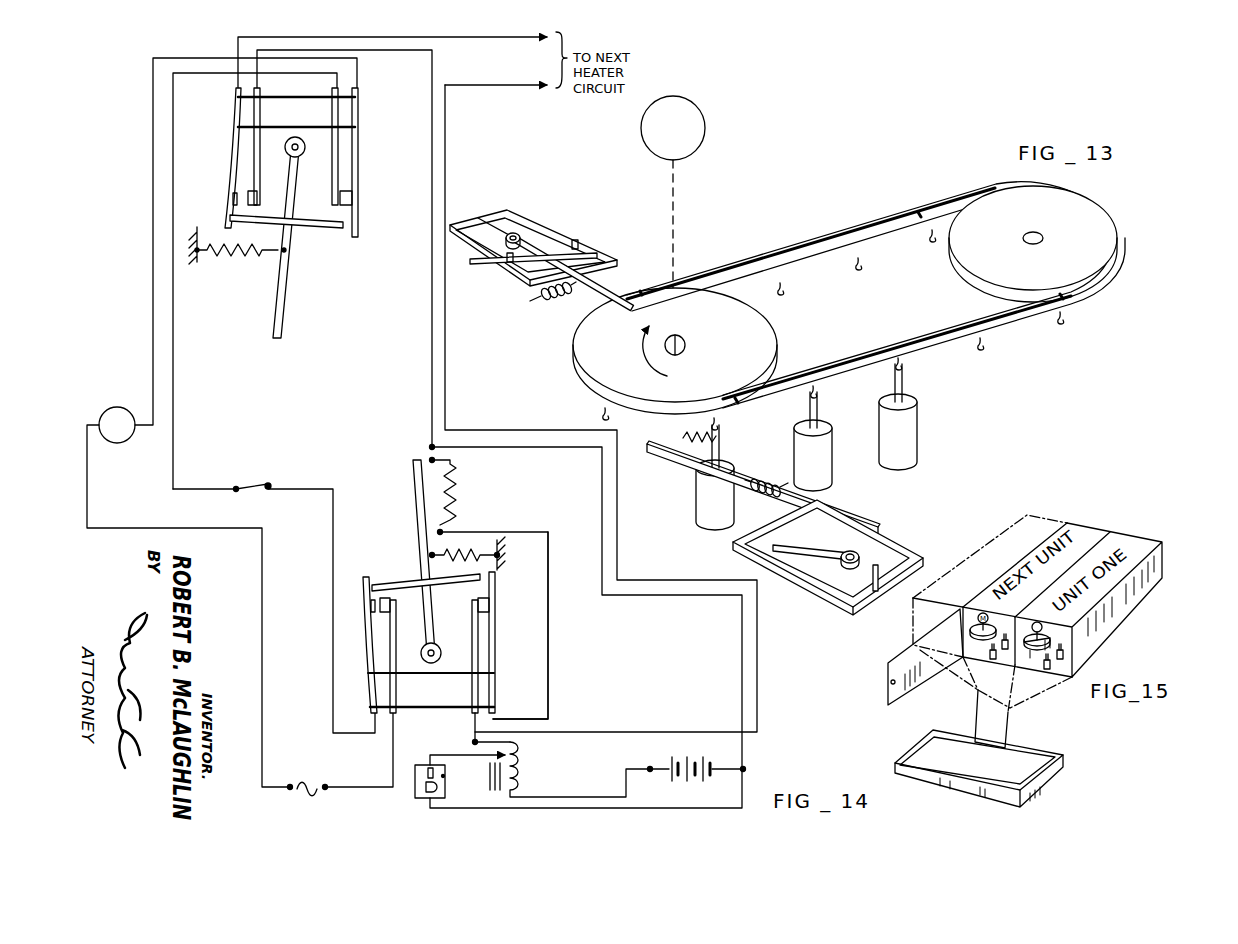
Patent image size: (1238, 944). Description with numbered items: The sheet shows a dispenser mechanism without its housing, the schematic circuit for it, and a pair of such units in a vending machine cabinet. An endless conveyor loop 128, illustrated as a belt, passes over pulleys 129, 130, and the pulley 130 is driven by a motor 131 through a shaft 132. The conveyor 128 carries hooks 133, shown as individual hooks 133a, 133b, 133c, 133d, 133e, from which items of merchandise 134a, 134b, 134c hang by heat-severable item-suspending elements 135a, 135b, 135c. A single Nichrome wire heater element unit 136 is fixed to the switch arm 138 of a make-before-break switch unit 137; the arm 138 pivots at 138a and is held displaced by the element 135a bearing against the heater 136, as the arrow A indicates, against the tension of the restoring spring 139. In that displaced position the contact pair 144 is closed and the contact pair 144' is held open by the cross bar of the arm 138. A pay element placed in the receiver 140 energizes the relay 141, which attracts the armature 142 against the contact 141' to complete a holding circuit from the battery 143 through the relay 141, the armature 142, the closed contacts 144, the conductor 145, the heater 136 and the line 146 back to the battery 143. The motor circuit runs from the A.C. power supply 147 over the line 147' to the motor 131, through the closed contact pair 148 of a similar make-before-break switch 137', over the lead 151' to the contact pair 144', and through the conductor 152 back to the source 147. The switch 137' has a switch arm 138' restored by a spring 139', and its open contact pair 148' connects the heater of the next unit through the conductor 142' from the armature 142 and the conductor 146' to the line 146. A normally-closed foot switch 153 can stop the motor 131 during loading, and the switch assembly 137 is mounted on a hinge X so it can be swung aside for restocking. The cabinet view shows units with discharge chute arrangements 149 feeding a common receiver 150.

In FIG. 13, the endless conveyor loop 128 is at (920, 203).
In FIG. 15, the endless conveyor loop 128 is at (1068, 634).
In FIG. 13, the pulley 129 is at (1075, 264).
In FIG. 13, the pulley 130 is at (738, 360).
In FIG. 15, the pulley 130 is at (1032, 650).
In FIG. 14, the motor 131 is at (121, 443).
In FIG. 13, the motor 131 is at (704, 128).
In FIG. 15, the motor 131 is at (1037, 622).
In FIG. 13, the shaft 132 is at (674, 222).
In FIG. 13, the hooks 133 is at (787, 289).
In FIG. 13, the hook 133a is at (721, 425).
In FIG. 13, the hook 133b is at (823, 396).
In FIG. 13, the hook 133c is at (906, 370).
In FIG. 13, the hook 133d is at (986, 347).
In FIG. 13, the hook 133e is at (1066, 320).
In FIG. 13, the heater 134a is at (699, 515).
In FIG. 15, the heater 134a is at (1050, 668).
In FIG. 13, the heater 134b is at (834, 482).
In FIG. 15, the heater 134b is at (1068, 653).
In FIG. 13, the item of merchandise 134c is at (920, 452).
In FIG. 13, the item-suspending element 135a is at (722, 450).
In FIG. 15, the item-suspending element 135a is at (1045, 668).
In FIG. 13, the item-suspending element 135b is at (822, 430).
In FIG. 13, the item-suspending element 135c is at (912, 405).
In FIG. 14, the heater element unit 136 is at (452, 514).
In FIG. 13, the heater element unit 136 is at (683, 438).
In FIG. 14, the switch arrangement 137 is at (452, 642).
In FIG. 13, the switch arrangement 137 is at (846, 557).
In FIG. 14, the switch 137' is at (318, 162).
In FIG. 13, the switch 137' is at (533, 230).
In FIG. 14, the switch arm 138 is at (421, 556).
In FIG. 13, the switch arm 138 is at (752, 488).
In FIG. 14, the switch arm 138' is at (286, 237).
In FIG. 13, the switch arm 138' is at (567, 272).
In FIG. 14, the pivot 138a is at (443, 646).
In FIG. 13, the pivot 138a is at (818, 585).
In FIG. 14, the spring 139 is at (488, 539).
In FIG. 13, the spring 139 is at (773, 494).
In FIG. 14, the spring 139' is at (237, 257).
In FIG. 13, the spring 139' is at (537, 313).
In FIG. 14, the receiver 140 is at (415, 790).
In FIG. 14, the relay 141 is at (570, 769).
In FIG. 14, the contact 141' is at (462, 748).
In FIG. 14, the armature 142 is at (518, 734).
In FIG. 14, the conductor 142' is at (601, 408).
In FIG. 14, the electric source 143 is at (668, 777).
In FIG. 14, the contact pair 144 is at (506, 618).
In FIG. 14, the contact pair 144' is at (365, 628).
In FIG. 14, the conductor 145 is at (549, 632).
In FIG. 14, the conductor 146 is at (586, 625).
In FIG. 14, the conductor 146' is at (344, 248).
In FIG. 14, the A.C. power supply 147 is at (294, 791).
In FIG. 14, the line 147' is at (198, 606).
In FIG. 14, the contact pair 148 is at (371, 210).
In FIG. 13, the contact pair 148 is at (596, 230).
In FIG. 14, the contact pair 148' is at (221, 188).
In FIG. 13, the contact pair 148' is at (484, 287).
In FIG. 15, the discharge chute arrangement 149 is at (975, 690).
In FIG. 15, the common receiver 150 is at (1035, 777).
In FIG. 14, the lead 151' is at (255, 281).
In FIG. 14, the conductor 152 is at (393, 752).
In FIG. 14, the foot switch 153 is at (254, 484).
In FIG. 14, the arrow A is at (502, 487).
In FIG. 13, the hinge X is at (879, 594).